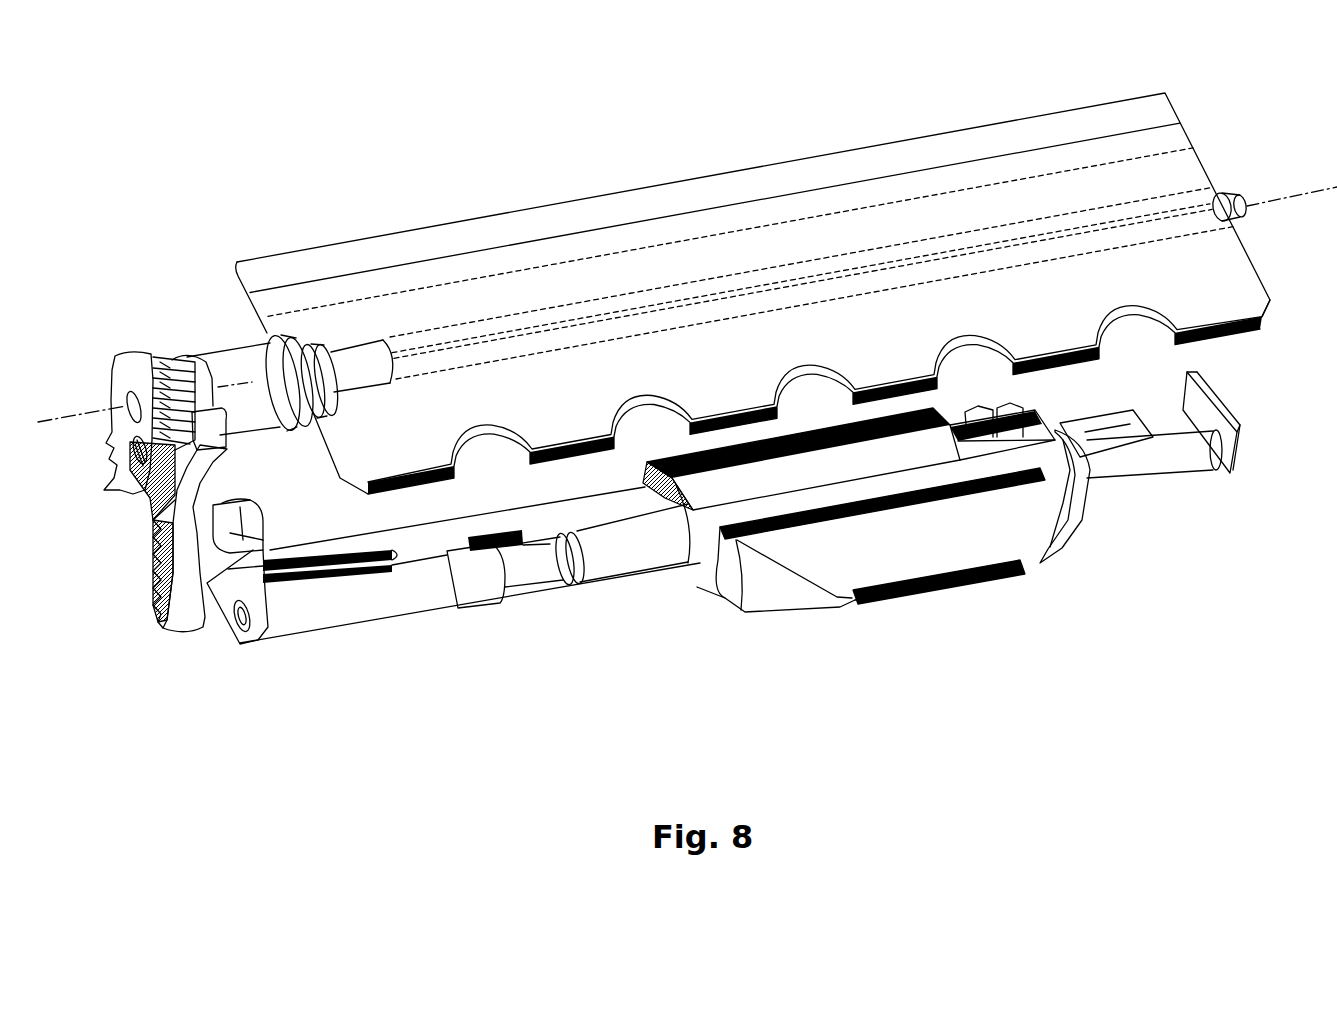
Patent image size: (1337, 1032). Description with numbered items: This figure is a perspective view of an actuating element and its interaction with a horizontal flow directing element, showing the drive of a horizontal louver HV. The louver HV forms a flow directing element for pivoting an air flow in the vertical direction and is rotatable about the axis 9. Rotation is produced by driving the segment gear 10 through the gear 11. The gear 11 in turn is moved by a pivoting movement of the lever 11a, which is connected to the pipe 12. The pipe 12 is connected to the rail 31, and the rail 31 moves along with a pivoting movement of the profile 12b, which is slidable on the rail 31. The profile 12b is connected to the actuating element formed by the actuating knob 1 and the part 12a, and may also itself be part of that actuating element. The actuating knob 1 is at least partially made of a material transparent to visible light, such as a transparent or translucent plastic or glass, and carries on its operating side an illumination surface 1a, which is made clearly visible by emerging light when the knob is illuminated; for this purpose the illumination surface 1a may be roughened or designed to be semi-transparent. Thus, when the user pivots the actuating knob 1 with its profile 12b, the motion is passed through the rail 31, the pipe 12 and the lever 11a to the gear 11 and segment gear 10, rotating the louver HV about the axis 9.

The horizontal louver HV is at (1238, 322).
The axis 9 is at (52, 418).
The segment gear 10 is at (108, 480).
The gear 11 is at (152, 548).
The lever 11a is at (216, 580).
The pipe 12 is at (395, 617).
The rail 31 is at (433, 540).
The actuating element 12a is at (687, 565).
The profile 12b is at (657, 495).
The illumination surface 1a is at (980, 574).
The actuating knob 1 is at (1057, 552).